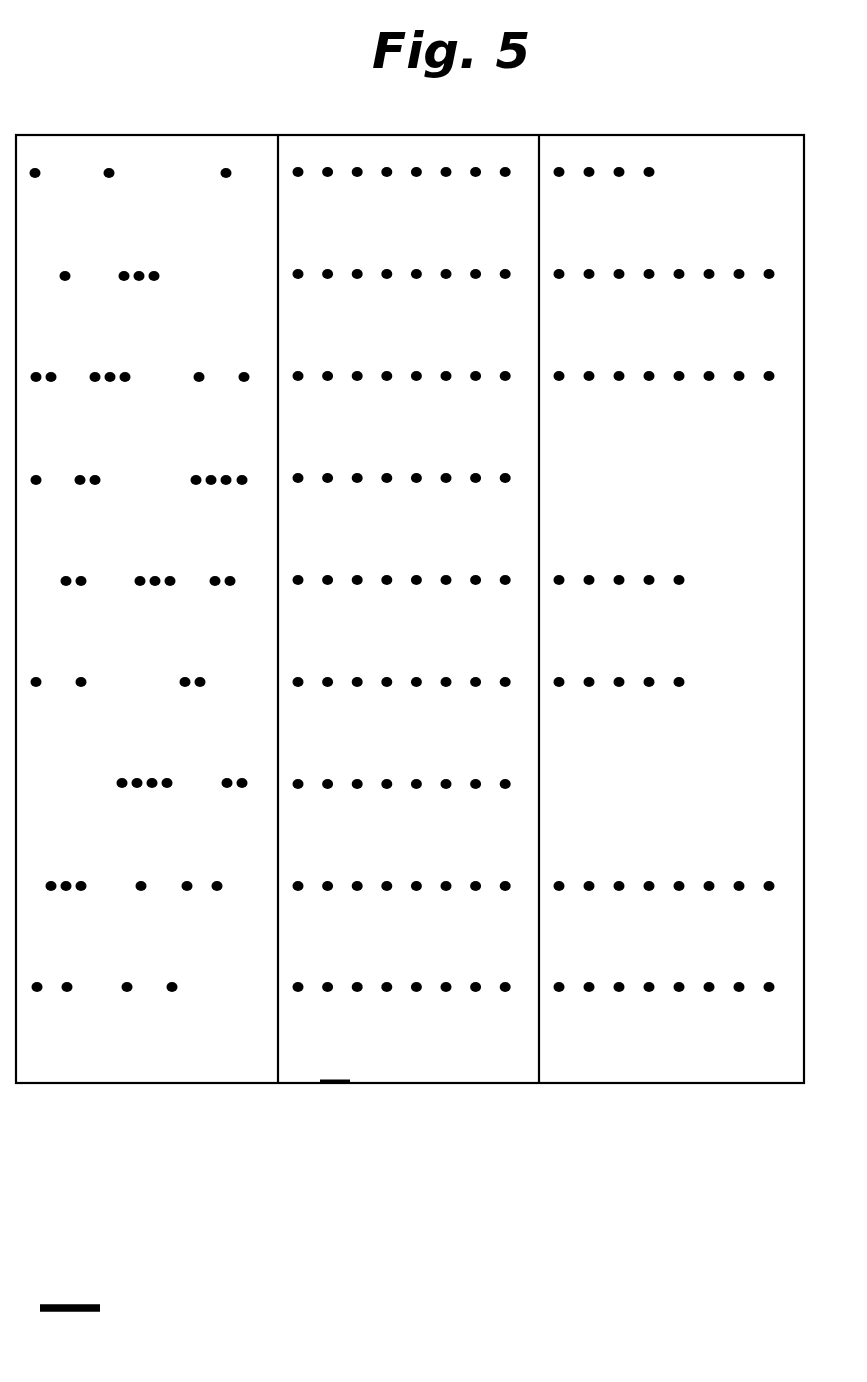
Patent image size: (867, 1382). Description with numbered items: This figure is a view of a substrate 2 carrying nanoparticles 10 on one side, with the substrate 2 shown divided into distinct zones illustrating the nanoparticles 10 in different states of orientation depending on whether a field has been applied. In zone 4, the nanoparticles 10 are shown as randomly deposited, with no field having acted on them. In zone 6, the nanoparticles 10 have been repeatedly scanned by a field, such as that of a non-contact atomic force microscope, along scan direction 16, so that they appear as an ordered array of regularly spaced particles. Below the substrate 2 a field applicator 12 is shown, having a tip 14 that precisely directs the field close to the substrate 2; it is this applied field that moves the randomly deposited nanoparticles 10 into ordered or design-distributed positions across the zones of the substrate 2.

The substrate 2 is at (211, 642).
The zone 4 is at (416, 642).
The zone 6 is at (664, 658).
The nanoparticles 10 is at (140, 588).
The field applicator 12 is at (70, 1341).
The tip 14 is at (85, 1286).
The scan direction 16 is at (322, 1068).